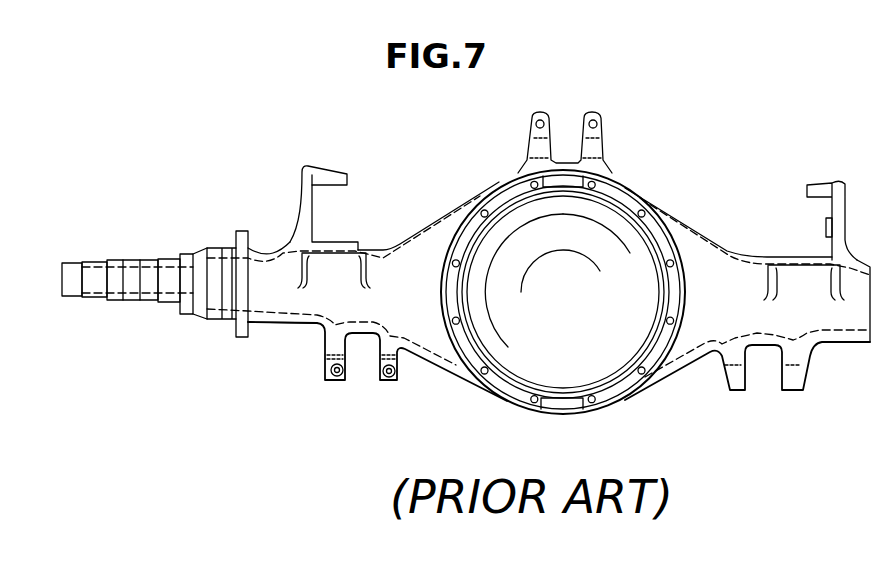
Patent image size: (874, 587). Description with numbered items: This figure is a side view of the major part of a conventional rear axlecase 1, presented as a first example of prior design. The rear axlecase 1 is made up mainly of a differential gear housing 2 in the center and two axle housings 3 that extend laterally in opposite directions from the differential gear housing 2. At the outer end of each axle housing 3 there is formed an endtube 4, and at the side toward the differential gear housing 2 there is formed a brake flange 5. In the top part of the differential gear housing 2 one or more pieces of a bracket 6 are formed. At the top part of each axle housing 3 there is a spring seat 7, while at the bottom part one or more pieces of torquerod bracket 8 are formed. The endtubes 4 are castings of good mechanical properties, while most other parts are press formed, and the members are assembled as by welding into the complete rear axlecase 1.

The rear axlecase 1 is at (411, 198).
The differential gear housing 2 is at (652, 382).
The axle housings 3 is at (280, 325).
The endtube 4 is at (133, 258).
The brake flange 5 is at (246, 231).
The bracket 6 is at (603, 128).
The spring seat 7 is at (314, 168).
The torquerod bracket 8 is at (399, 372).